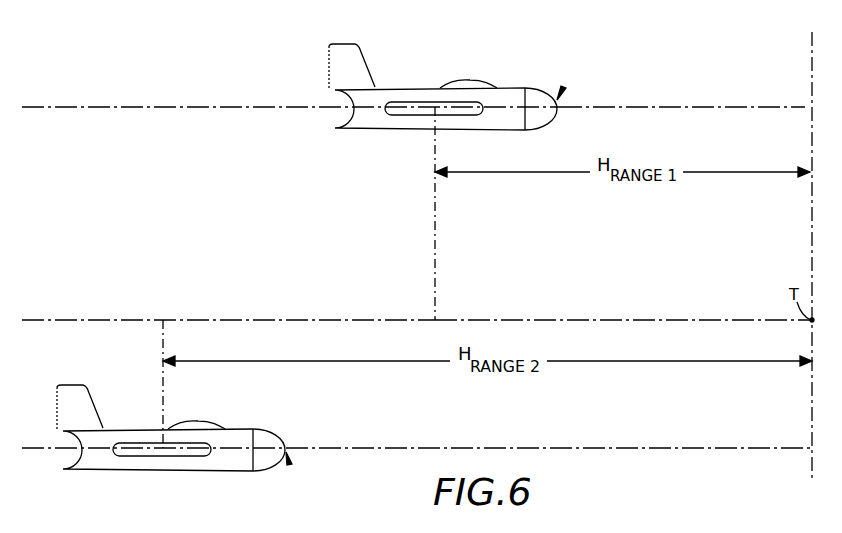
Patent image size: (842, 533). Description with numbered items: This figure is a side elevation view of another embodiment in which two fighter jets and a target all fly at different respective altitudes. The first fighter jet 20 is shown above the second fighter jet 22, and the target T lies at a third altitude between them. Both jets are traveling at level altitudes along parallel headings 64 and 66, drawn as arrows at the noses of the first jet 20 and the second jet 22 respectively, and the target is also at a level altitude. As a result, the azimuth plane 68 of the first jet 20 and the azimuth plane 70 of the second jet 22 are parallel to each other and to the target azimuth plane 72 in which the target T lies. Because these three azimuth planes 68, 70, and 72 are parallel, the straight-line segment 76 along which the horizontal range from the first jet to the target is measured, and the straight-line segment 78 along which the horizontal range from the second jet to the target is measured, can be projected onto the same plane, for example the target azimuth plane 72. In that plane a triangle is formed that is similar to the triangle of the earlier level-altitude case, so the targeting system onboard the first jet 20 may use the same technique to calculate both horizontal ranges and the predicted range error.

The first fighter jet 20 is at (320, 97).
The second fighter jet 22 is at (48, 466).
The heading of first jet 64 is at (563, 87).
The heading of second jet 66 is at (289, 465).
The azimuth plane of first jet 68 is at (125, 108).
The azimuth plane of second jet 70 is at (587, 447).
The target azimuth plane 72 is at (88, 320).
The straight-line segment for H_RANGE1 76 is at (657, 107).
The straight-line segment for H_RANGE2 78 is at (470, 320).